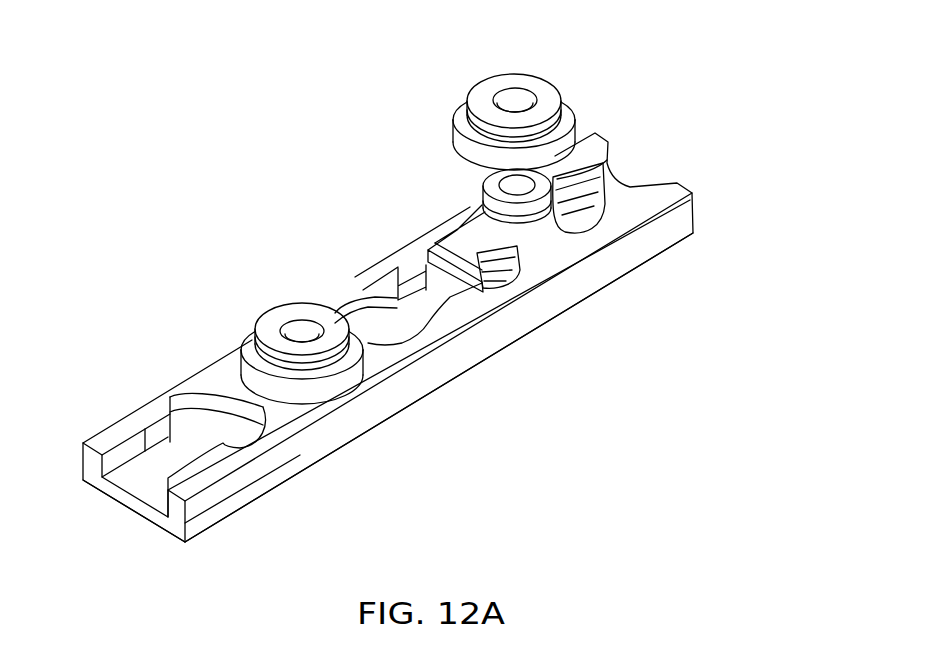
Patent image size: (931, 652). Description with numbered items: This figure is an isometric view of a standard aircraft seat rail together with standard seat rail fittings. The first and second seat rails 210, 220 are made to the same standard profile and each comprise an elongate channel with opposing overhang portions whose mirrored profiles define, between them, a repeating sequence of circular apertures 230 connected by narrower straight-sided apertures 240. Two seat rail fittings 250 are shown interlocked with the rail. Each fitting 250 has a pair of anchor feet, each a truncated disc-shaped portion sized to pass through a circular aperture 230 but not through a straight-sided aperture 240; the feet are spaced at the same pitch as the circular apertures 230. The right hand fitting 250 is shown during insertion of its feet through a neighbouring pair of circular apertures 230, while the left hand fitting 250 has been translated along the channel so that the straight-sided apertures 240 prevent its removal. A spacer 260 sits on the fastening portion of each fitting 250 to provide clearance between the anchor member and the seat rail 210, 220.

The first seat rail 210 is at (618, 257).
The second seat rail 220 is at (388, 387).
The circular apertures 230 is at (403, 343).
The straight-sided apertures 240 is at (410, 278).
The seat rail fitting 250 is at (483, 190).
The spacer 260 is at (483, 90).